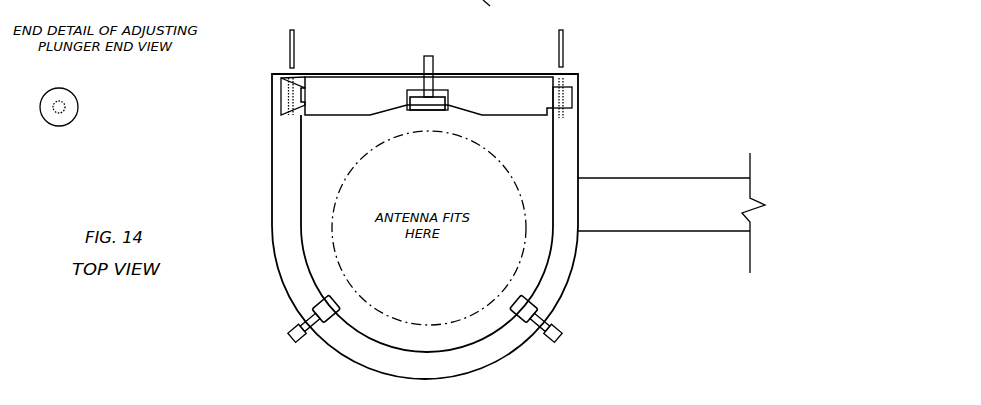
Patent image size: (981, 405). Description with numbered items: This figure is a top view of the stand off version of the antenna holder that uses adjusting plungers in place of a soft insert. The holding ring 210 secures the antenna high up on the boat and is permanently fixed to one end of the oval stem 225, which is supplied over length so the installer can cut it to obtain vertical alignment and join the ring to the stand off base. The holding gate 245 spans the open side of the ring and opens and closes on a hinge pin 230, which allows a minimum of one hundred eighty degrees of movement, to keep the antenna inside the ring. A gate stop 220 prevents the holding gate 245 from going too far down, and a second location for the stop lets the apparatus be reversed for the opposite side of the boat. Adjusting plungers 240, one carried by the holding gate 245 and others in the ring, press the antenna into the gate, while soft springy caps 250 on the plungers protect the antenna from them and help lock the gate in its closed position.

The holding ring 210 is at (563, 150).
The gate stop 220 is at (295, 59).
The oval stem 225 is at (671, 213).
The hinge pin 230 is at (566, 62).
The adjusting plungers 240 is at (82, 95).
The holding gate with adjusting plunger 245 is at (336, 123).
The soft springy caps 250 is at (425, 206).